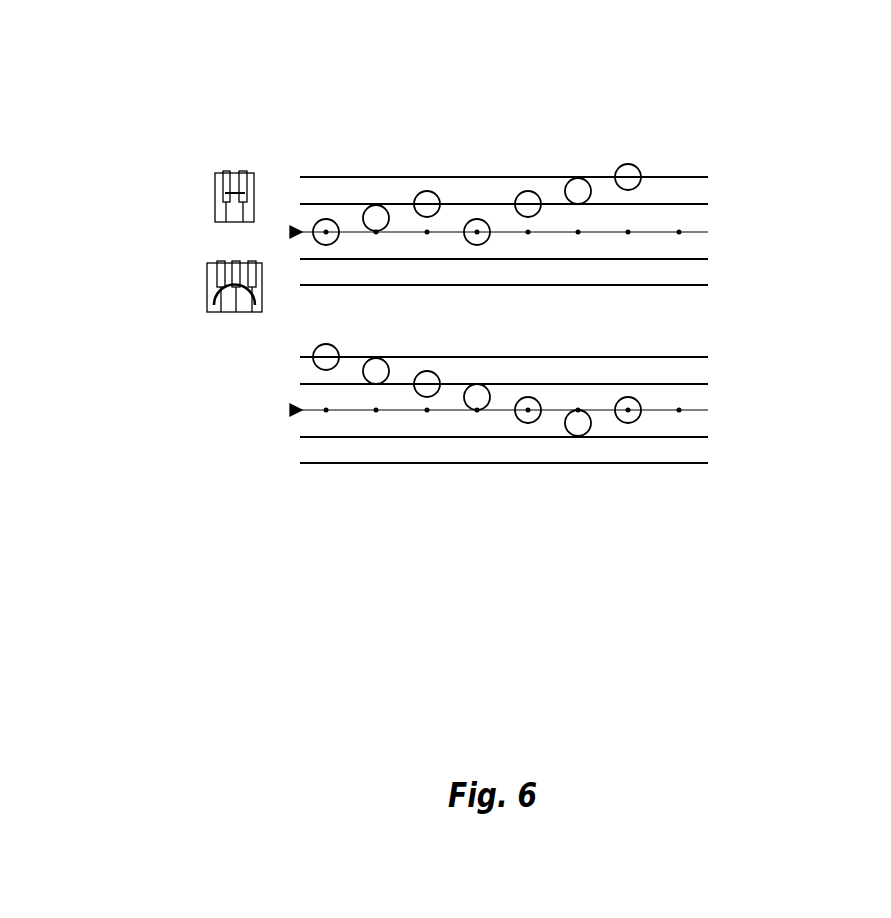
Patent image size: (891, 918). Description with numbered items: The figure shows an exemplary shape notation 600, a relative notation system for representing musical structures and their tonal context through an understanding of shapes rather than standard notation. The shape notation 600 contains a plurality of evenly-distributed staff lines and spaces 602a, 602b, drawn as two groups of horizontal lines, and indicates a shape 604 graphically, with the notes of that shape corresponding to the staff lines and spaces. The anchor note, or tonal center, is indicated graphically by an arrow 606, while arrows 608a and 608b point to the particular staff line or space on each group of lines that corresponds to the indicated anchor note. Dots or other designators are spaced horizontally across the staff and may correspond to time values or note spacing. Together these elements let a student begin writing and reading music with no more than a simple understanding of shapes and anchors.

The shape notation 600 is at (507, 52).
The staff lines and spaces 602a is at (759, 168).
The staff lines and spaces 602b is at (759, 348).
The shape 604 is at (166, 200).
The arrow 606 is at (220, 260).
The arrow 608a is at (292, 232).
The arrow 608b is at (292, 410).